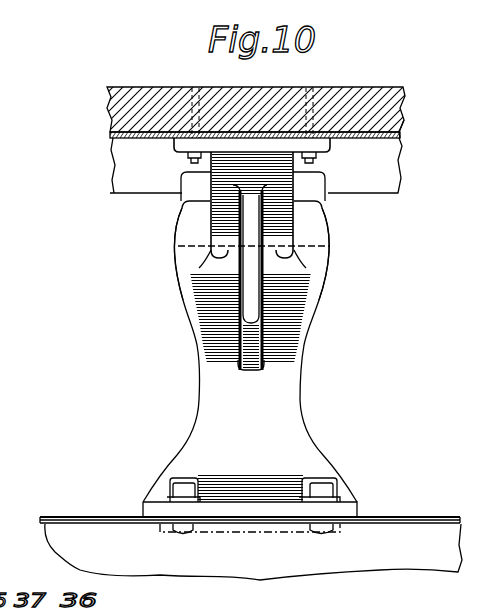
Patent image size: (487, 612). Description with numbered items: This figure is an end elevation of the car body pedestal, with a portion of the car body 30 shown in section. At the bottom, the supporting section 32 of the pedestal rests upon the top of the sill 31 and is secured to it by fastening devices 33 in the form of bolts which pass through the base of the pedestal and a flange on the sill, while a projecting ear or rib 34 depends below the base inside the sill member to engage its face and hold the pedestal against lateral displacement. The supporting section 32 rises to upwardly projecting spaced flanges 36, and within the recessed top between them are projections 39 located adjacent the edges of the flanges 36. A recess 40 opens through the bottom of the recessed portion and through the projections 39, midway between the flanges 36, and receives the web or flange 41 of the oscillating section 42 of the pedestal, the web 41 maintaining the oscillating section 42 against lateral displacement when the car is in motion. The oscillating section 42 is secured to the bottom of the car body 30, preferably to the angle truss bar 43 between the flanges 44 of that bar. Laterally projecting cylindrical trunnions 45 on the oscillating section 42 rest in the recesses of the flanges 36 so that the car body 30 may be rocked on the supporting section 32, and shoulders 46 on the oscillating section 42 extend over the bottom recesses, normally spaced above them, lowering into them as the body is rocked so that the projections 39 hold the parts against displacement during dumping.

The car body 30 is at (370, 104).
The sills 31 is at (80, 537).
The supporting section 32 is at (213, 402).
The fastening devices 33 is at (183, 488).
The projecting ear or rib 34 is at (276, 527).
The upwardly projecting spaced flanges 36 is at (188, 226).
The projections 39 is at (199, 268).
The recess 40 is at (243, 324).
The web or flange 41 is at (250, 280).
The oscillating section 42 is at (236, 156).
The angle truss bar 43 is at (405, 140).
The flanges of the angle truss bar 44 is at (392, 185).
The trunnions 45 is at (182, 177).
The shoulders 46 is at (212, 212).